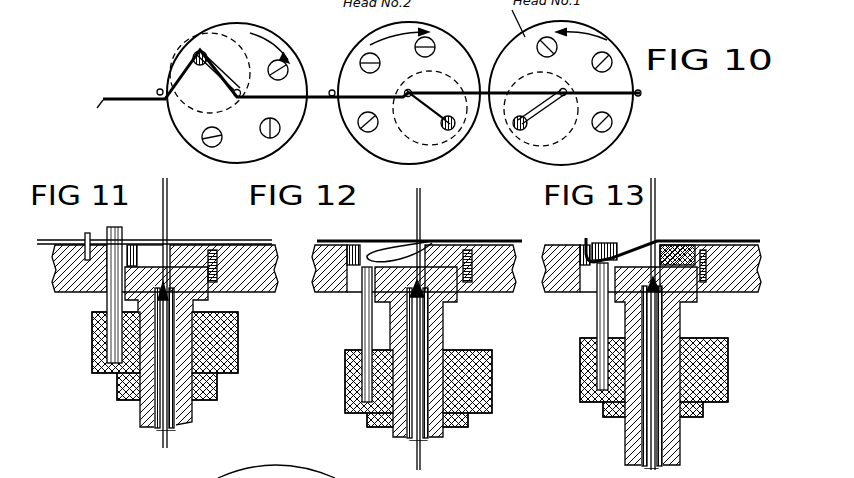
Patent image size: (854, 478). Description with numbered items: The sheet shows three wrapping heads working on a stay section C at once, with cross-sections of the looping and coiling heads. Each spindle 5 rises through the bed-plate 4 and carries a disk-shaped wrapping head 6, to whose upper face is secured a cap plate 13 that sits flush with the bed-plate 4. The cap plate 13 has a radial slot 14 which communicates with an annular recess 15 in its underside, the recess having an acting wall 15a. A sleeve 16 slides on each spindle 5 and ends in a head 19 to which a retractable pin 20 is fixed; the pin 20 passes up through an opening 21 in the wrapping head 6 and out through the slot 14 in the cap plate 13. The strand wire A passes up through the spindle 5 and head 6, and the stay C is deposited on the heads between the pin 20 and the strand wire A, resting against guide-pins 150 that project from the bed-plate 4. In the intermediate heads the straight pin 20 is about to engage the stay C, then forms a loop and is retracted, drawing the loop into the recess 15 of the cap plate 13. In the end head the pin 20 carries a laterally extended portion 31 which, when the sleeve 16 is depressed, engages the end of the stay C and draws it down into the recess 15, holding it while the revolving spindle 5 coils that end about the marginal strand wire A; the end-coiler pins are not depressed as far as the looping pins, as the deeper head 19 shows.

In FIG. 11, the bed-plate 4 is at (272, 273).
In FIG. 12, the bed-plate 4 is at (505, 292).
In FIG. 13, the bed-plate 4 is at (758, 278).
In FIG. 11, the spindle 5 is at (180, 426).
In FIG. 12, the spindle 5 is at (435, 438).
In FIG. 13, the spindle 5 is at (672, 441).
In FIG. 11, the wrapping head 6 is at (150, 260).
In FIG. 12, the wrapping head 6 is at (470, 290).
In FIG. 13, the wrapping head 6 is at (712, 290).
In FIG. 10, the cap plate 13 is at (215, 30).
In FIG. 11, the cap plate 13 is at (193, 253).
In FIG. 12, the cap plate 13 is at (467, 266).
In FIG. 13, the cap plate 13 is at (685, 247).
In FIG. 10, the slot 14 is at (230, 70).
In FIG. 11, the slot 14 is at (145, 248).
In FIG. 12, the slot 14 is at (417, 288).
In FIG. 13, the slot 14 is at (604, 245).
In FIG. 11, the annular recess 15 is at (205, 300).
In FIG. 12, the annular recess 15 is at (405, 262).
In FIG. 13, the annular recess 15 is at (625, 262).
In FIG. 10, the acting wall 15a is at (167, 86).
In FIG. 11, the acting wall 15a is at (102, 260).
In FIG. 11, the sleeve 16 is at (204, 405).
In FIG. 12, the sleeve 16 is at (455, 433).
In FIG. 13, the sleeve 16 is at (690, 418).
In FIG. 11, the head 19 is at (100, 360).
In FIG. 12, the head 19 is at (480, 380).
In FIG. 13, the head 19 is at (715, 383).
In FIG. 10, the retractable pin 20 is at (194, 57).
In FIG. 11, the retractable pin 20 is at (107, 302).
In FIG. 12, the retractable pin 20 is at (363, 323).
In FIG. 13, the retractable pin 20 is at (600, 367).
In FIG. 11, the opening 21 is at (333, 293).
In FIG. 13, the opening 21 is at (596, 288).
In FIG. 10, the laterally extended portion 31 is at (524, 133).
In FIG. 13, the laterally extended portion 31 is at (590, 288).
In FIG. 10, the guide-pin 150 is at (331, 89).
In FIG. 11, the guide-pin 150 is at (84, 233).
In FIG. 11, the strand wire A is at (167, 203).
In FIG. 12, the strand wire A is at (415, 212).
In FIG. 13, the strand wire A is at (648, 213).
In FIG. 10, the stay section C is at (363, 92).
In FIG. 11, the stay section C is at (40, 245).
In FIG. 12, the stay section C is at (450, 240).
In FIG. 13, the stay section C is at (586, 238).